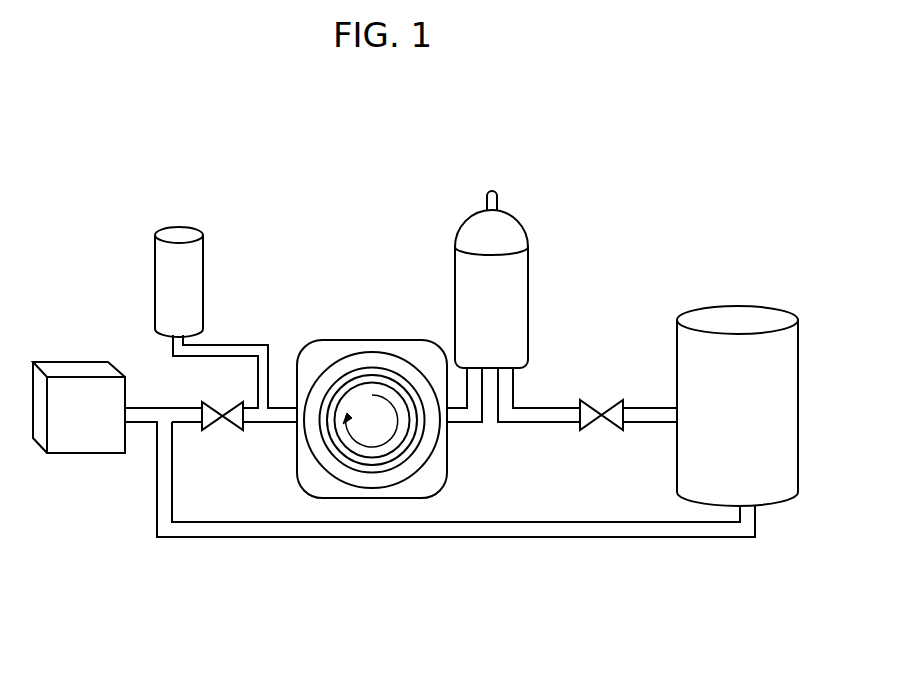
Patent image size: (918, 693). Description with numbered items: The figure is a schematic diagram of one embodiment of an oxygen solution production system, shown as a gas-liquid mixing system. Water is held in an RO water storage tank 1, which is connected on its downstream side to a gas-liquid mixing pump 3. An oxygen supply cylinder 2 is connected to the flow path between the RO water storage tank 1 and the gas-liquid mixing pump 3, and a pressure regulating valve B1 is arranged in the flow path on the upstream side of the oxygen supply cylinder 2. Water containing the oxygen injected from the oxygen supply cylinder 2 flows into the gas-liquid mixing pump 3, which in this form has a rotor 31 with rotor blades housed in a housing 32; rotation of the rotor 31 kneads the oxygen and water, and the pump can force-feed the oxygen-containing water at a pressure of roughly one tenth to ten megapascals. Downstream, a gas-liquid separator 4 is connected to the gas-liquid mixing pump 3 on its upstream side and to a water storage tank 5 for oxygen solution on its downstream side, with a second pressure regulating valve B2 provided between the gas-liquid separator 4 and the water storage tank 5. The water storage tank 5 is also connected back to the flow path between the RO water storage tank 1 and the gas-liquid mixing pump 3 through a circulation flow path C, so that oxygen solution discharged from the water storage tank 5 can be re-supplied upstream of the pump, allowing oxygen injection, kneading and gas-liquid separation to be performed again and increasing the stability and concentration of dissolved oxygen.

The RO water storage tank 1 is at (80, 453).
The oxygen supply cylinder 2 is at (193, 260).
The gas-liquid mixing pump 3 is at (349, 340).
The rotor 31 is at (377, 382).
The housing 32 is at (410, 386).
The gas-liquid separator 4 is at (528, 258).
The water storage tank 5 is at (780, 400).
The pressure regulating valve B1 is at (228, 431).
The pressure regulating valve B2 is at (590, 400).
The circulation flow path C is at (330, 538).